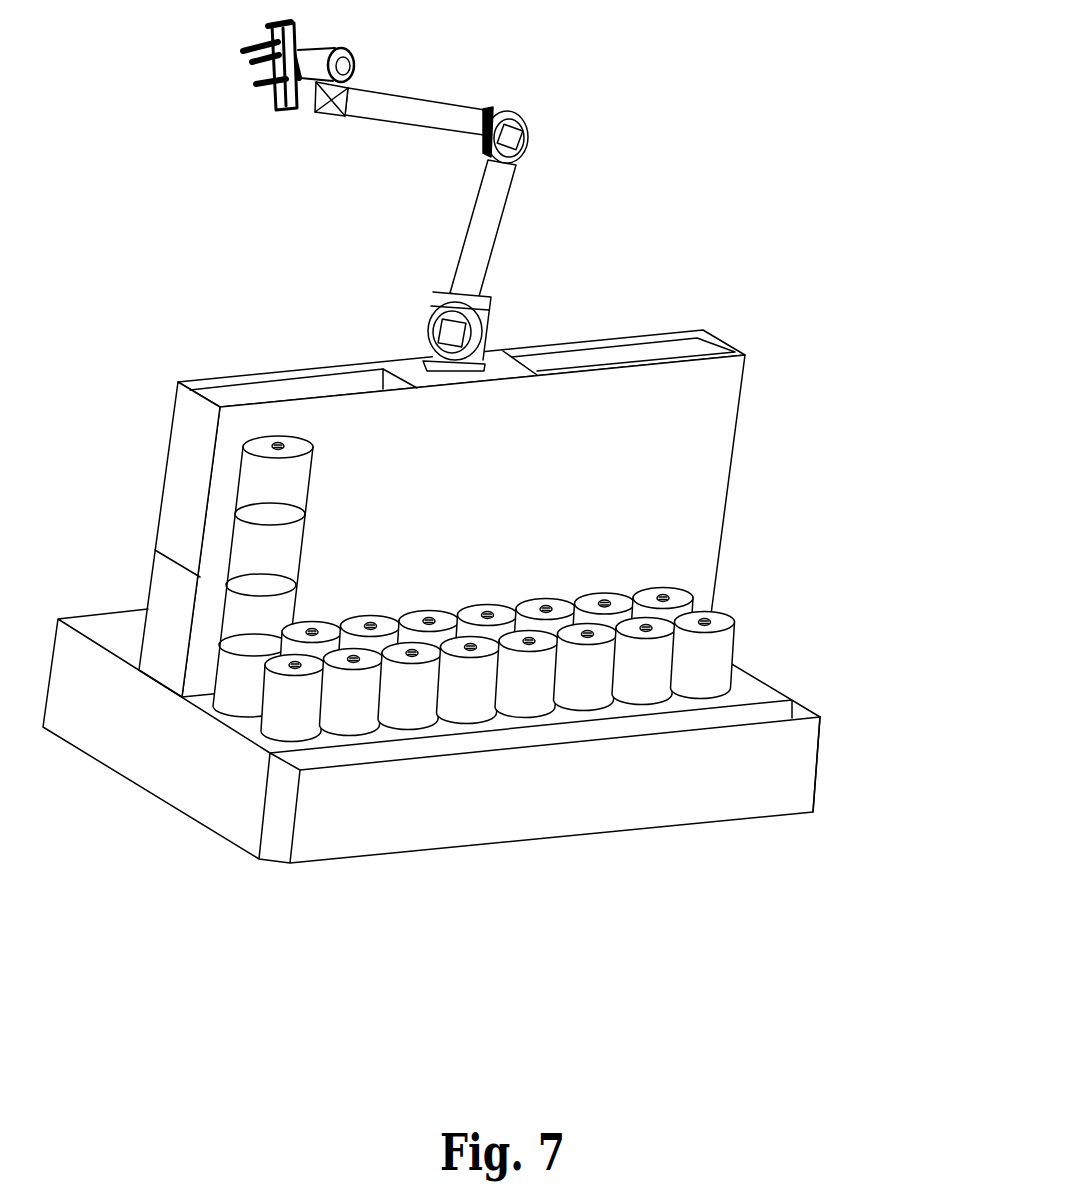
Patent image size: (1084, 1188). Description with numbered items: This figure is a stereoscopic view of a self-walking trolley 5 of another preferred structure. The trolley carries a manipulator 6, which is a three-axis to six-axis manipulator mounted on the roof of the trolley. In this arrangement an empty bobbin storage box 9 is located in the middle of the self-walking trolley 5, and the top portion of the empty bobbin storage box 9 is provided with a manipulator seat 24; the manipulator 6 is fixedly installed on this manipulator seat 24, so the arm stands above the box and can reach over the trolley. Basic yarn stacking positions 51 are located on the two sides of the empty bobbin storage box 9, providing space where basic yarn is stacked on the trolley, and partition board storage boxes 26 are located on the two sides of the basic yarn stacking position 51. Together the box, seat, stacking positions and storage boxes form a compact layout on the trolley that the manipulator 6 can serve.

The self-walking trolley 5 is at (762, 678).
The manipulator 6 is at (498, 205).
The empty bobbin storage box 9 is at (683, 352).
The manipulator seat 24 is at (493, 373).
The partition board storage box 26 is at (798, 706).
The basic yarn stacking position 51 is at (740, 667).